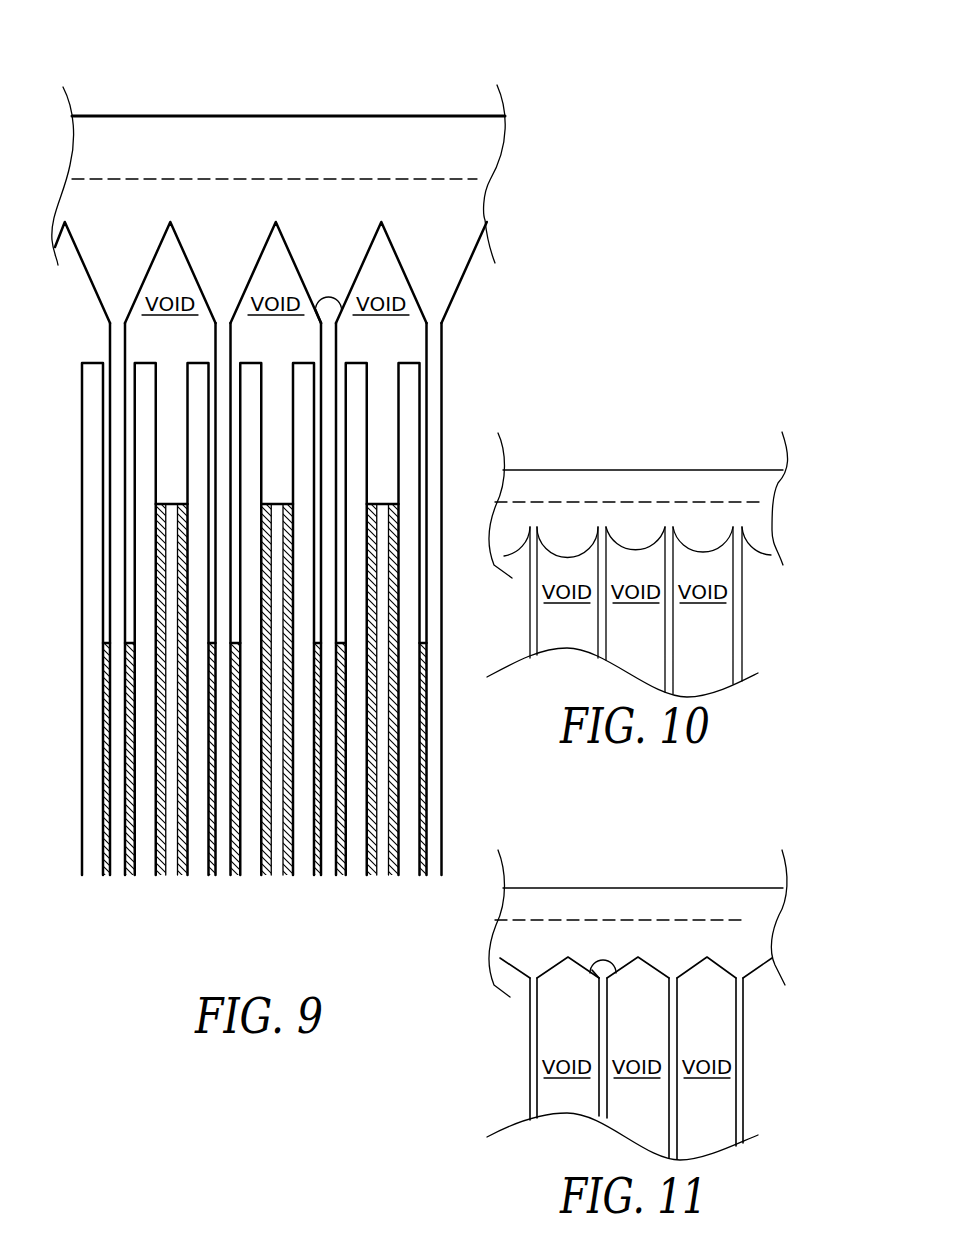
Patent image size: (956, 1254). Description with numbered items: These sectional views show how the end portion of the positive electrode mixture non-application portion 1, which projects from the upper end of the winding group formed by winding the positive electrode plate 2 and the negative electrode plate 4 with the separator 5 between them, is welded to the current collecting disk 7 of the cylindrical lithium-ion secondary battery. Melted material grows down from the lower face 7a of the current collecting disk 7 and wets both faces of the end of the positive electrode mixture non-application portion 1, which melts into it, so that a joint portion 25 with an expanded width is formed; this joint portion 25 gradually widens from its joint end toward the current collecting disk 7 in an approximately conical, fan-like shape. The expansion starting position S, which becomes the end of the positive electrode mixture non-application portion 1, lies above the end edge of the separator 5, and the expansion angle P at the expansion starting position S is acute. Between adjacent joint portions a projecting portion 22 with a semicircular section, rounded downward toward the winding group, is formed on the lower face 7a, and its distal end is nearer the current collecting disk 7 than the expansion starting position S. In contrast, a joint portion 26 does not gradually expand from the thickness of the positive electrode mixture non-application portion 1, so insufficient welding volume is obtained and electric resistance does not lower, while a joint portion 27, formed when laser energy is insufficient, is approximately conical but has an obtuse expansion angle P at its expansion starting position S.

In FIG. 9, the positive electrode mixture non-application portion 1 is at (118, 357).
In FIG. 10, the positive electrode mixture non-application portion 1 is at (737, 630).
In FIG. 11, the positive electrode mixture non-application portion 1 is at (740, 1098).
In FIG. 9, the positive electrode plate 2 is at (99, 881).
In FIG. 9, the negative electrode plate 4 is at (190, 881).
In FIG. 9, the separator 5 is at (93, 877).
In FIG. 9, the current collecting disk 7 is at (292, 160).
In FIG. 10, the current collecting disk 7 is at (645, 493).
In FIG. 11, the current collecting disk 7 is at (643, 912).
In FIG. 9, the lower face of the current collecting disk 7a is at (477, 179).
In FIG. 10, the lower face of the current collecting disk 7a is at (760, 502).
In FIG. 11, the lower face of the current collecting disk 7a is at (747, 920).
In FIG. 9, the projecting portion 22 is at (477, 198).
In FIG. 10, the projecting portion 22 is at (755, 515).
In FIG. 11, the projecting portion 22 is at (752, 940).
In FIG. 9, the joint portion 25 is at (455, 282).
In FIG. 10, the joint portion having no expansion 26 is at (717, 547).
In FIG. 11, the joint portion with obtuse expansion angle 27 is at (753, 970).
In FIG. 9, the expansion angle P is at (329, 288).
In FIG. 11, the expansion angle P is at (603, 953).
In FIG. 9, the expansion starting position S is at (308, 333).
In FIG. 11, the expansion starting position S is at (585, 989).